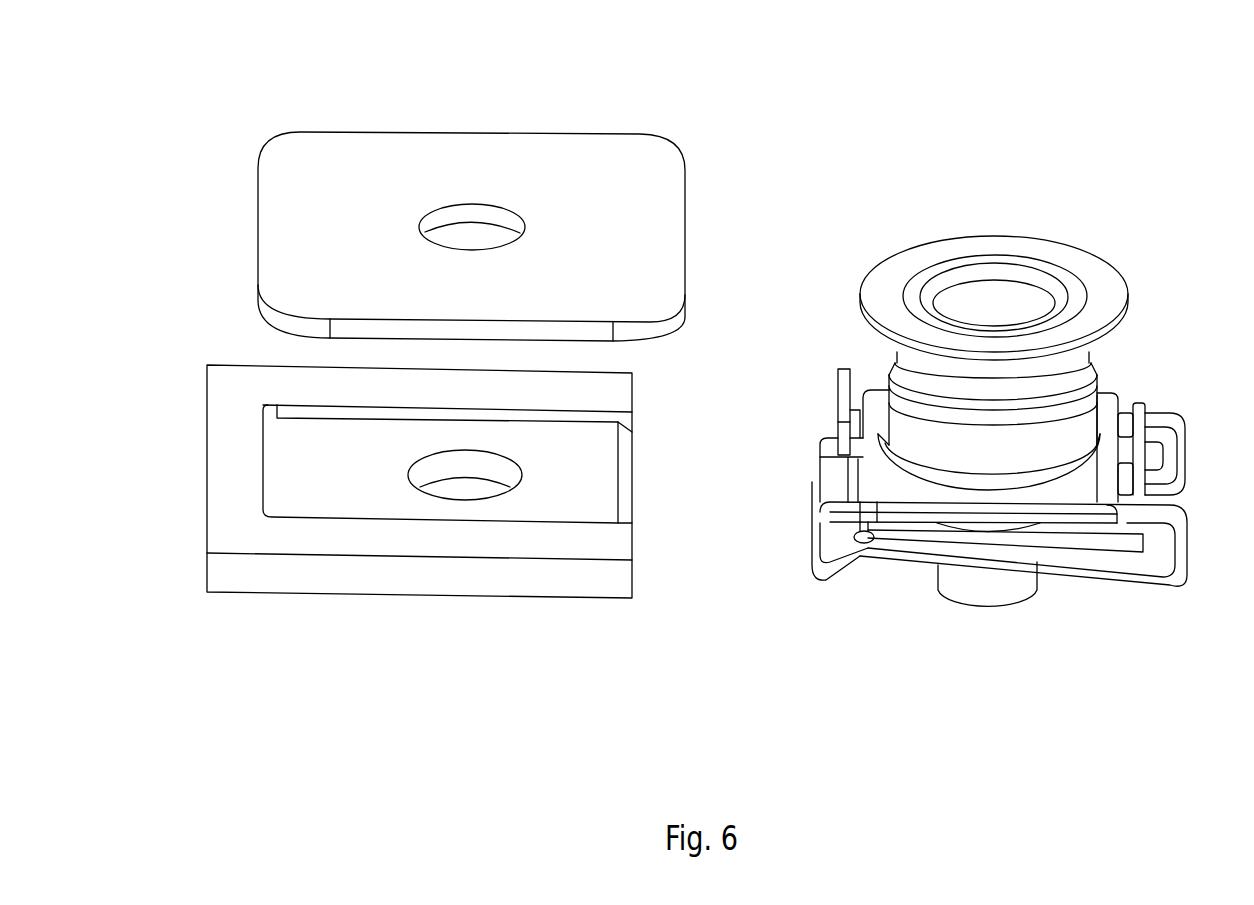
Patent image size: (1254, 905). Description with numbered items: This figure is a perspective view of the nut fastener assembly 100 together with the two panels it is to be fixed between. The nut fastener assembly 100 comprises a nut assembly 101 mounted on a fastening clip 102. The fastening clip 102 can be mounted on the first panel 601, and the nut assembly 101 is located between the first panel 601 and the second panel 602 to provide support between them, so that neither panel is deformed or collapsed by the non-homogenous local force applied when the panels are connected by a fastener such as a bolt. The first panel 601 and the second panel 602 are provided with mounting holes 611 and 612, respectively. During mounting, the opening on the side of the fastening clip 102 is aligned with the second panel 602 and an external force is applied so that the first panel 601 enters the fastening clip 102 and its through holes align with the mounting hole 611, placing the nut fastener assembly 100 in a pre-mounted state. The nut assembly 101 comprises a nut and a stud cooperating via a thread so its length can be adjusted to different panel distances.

The nut fastener assembly 100 is at (1022, 360).
The nut assembly 101 is at (1027, 250).
The fastening clip 102 is at (990, 543).
The first panel 601 is at (600, 565).
The second panel 602 is at (628, 232).
The mounting hole 611 is at (462, 482).
The mounting hole 612 is at (472, 240).